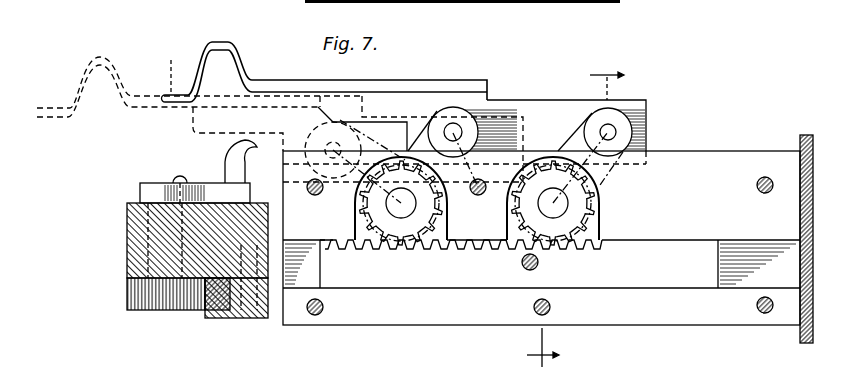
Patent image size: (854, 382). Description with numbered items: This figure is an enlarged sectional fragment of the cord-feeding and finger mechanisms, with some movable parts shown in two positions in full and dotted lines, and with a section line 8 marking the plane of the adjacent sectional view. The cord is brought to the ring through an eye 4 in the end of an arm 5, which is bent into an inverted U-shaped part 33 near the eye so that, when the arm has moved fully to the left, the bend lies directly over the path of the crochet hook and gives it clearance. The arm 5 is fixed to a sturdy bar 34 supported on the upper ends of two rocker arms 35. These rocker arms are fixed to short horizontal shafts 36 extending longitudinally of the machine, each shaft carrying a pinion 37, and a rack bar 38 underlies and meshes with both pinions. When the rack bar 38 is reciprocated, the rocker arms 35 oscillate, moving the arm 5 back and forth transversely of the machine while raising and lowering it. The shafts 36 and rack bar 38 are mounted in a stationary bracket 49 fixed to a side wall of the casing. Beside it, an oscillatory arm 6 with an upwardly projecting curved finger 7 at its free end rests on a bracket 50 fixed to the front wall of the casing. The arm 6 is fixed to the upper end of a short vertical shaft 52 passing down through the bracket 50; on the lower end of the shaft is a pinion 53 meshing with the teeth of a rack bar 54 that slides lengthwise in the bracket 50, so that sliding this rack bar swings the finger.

The eye 4 is at (165, 67).
The arm 5 is at (277, 81).
The arm 6 is at (203, 182).
The curved finger 7 is at (241, 154).
The section line 8 is at (575, 218).
The inverted U-shaped part 33 is at (230, 43).
The bar 34 is at (543, 111).
The rocker arm 35 is at (455, 108).
The shaft 36 is at (396, 205).
The pinion 37 is at (372, 160).
The rack bar 38 is at (461, 260).
The bracket 49 is at (723, 154).
The bracket 50 is at (127, 213).
The vertical shaft 52 is at (147, 229).
The pinion 53 is at (140, 293).
The rack bar 54 is at (217, 310).